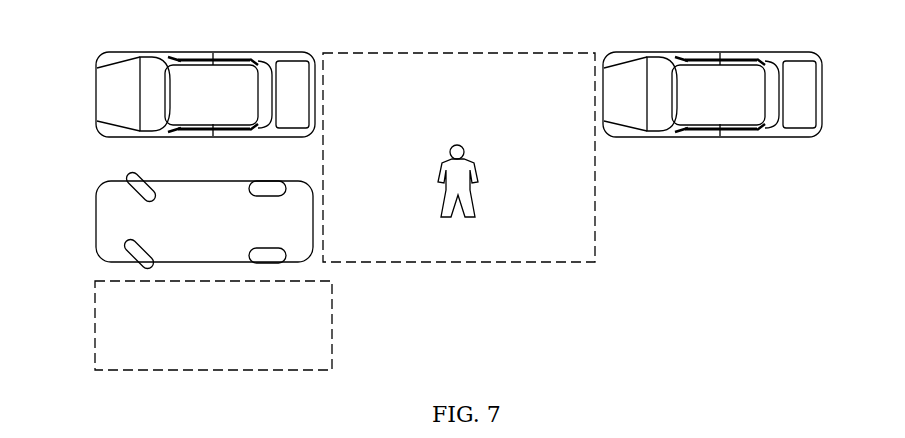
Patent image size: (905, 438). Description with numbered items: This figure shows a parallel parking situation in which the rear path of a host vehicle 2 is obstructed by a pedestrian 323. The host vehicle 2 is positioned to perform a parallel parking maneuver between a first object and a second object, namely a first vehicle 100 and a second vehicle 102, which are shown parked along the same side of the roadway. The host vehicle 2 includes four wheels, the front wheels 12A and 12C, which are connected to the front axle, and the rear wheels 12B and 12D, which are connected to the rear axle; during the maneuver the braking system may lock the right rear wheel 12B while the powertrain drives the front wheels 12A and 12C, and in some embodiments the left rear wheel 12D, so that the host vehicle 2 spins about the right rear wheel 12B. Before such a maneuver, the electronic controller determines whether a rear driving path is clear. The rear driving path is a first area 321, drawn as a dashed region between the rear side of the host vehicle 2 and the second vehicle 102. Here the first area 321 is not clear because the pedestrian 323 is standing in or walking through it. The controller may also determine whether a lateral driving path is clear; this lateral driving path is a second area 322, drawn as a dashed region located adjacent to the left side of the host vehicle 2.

The first vehicle 100 is at (107, 100).
The second vehicle 102 is at (813, 88).
The host vehicle 2 is at (103, 213).
The front wheel 12A is at (133, 180).
The right rear wheel 12B is at (267, 187).
The front wheel 12C is at (138, 250).
The left rear wheel 12D is at (265, 257).
The first area 321 is at (457, 60).
The second area 322 is at (103, 323).
The pedestrian 323 is at (457, 170).